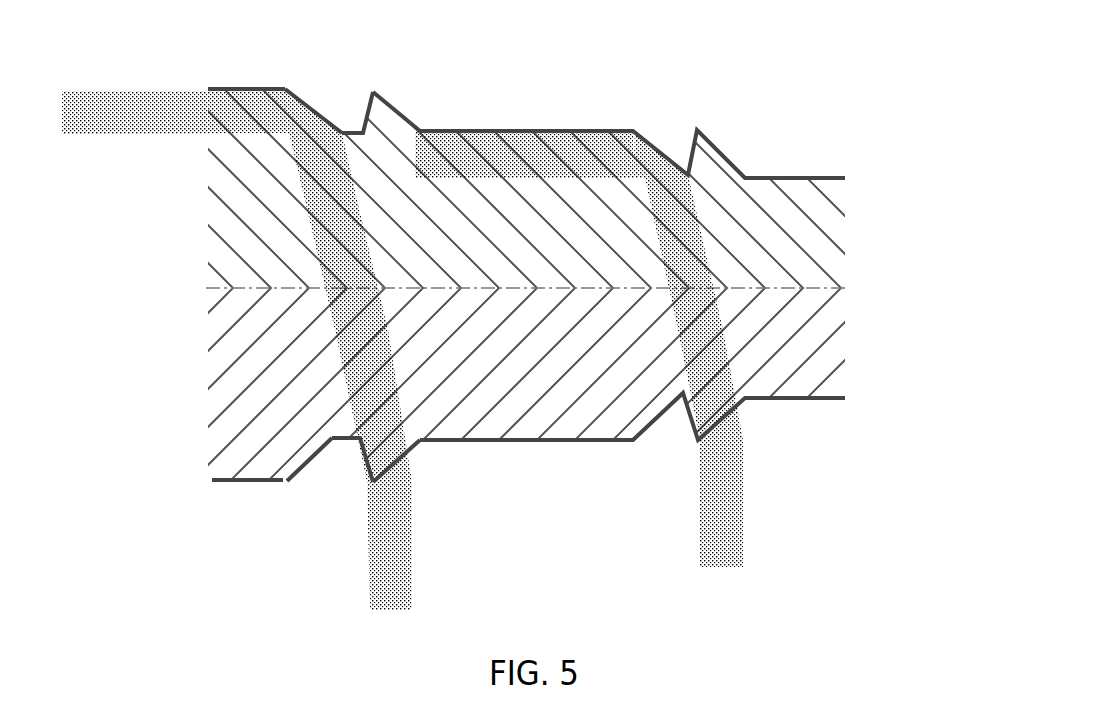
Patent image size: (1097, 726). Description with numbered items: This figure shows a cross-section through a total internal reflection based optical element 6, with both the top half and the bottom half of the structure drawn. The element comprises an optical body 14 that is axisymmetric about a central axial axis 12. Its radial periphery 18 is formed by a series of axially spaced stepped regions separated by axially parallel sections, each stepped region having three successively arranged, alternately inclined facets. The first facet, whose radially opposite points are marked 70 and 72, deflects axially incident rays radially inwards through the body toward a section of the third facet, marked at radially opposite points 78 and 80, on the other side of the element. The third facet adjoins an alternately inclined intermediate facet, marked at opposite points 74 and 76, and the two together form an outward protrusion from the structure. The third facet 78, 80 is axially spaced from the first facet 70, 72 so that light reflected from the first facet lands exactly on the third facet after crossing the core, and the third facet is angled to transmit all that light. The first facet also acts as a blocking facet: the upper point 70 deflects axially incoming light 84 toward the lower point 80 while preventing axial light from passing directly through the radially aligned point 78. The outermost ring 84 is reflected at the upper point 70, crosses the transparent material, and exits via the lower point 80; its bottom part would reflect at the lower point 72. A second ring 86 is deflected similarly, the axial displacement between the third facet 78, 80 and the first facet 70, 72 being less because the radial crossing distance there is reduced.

The total internal reflection based optical element 6 is at (477, 319).
The central axial axis 12 is at (862, 293).
The optical body 14 is at (218, 403).
The radial periphery 18 is at (864, 177).
The upper point of first facet 70 is at (305, 105).
The lower point of first facet 72 is at (303, 473).
The upper point of intermediate facet 74 is at (365, 113).
The lower point of intermediate facet 76 is at (358, 470).
The upper point of third facet 78 is at (398, 112).
The lower point of third facet 80 is at (407, 457).
The outermost ring of horizontal bundle 84 is at (138, 103).
The second ring 86 is at (563, 147).